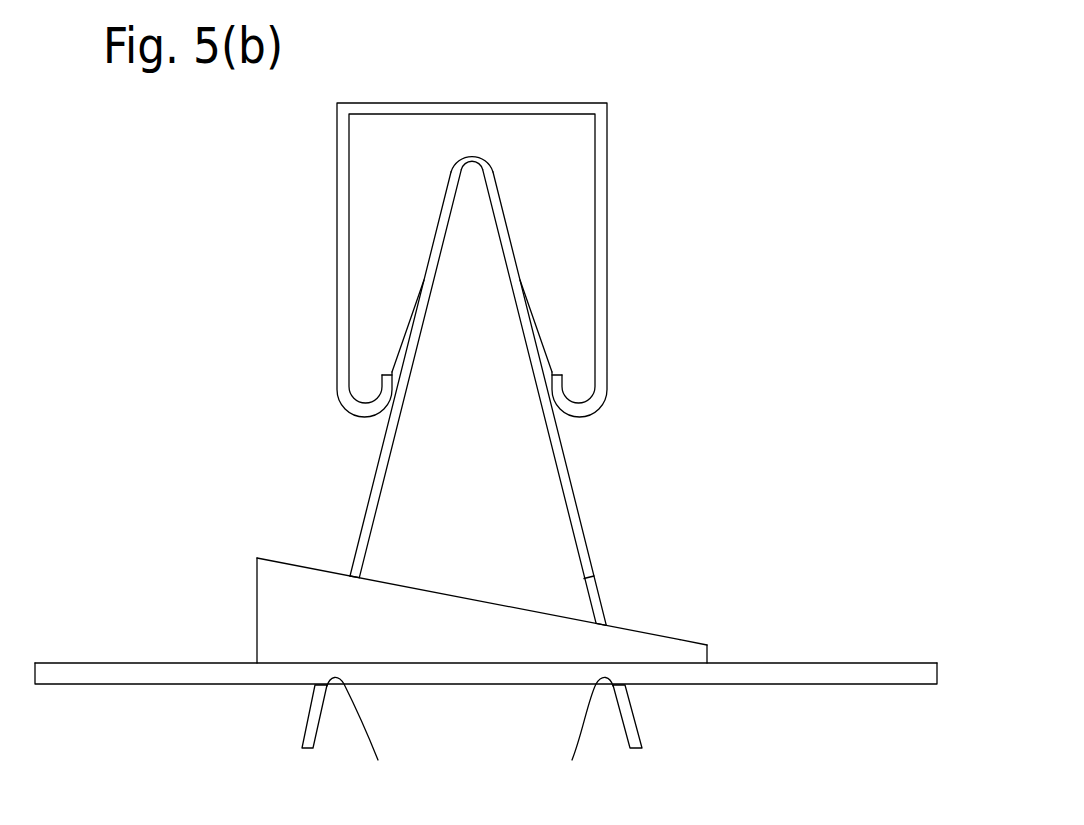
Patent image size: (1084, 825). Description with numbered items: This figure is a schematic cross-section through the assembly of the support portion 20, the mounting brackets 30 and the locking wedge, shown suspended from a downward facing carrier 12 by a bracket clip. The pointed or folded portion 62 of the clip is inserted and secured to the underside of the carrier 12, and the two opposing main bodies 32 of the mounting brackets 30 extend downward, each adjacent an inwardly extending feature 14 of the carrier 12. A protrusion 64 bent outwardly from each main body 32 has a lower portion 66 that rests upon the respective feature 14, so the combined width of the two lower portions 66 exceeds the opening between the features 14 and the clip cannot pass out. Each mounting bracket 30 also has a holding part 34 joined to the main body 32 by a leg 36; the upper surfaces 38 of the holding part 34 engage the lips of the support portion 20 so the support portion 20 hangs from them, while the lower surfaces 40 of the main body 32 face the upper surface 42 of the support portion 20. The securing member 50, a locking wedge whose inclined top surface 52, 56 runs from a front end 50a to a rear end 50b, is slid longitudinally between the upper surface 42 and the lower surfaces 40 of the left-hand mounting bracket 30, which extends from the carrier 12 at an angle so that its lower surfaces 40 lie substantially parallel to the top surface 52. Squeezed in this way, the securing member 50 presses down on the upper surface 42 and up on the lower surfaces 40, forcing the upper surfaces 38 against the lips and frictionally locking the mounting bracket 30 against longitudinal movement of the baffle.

The carrier 12 is at (523, 220).
The inwardly extending feature 14 is at (560, 378).
The support portion 20 is at (486, 681).
The mounting bracket 30 is at (494, 370).
The main body 32 is at (385, 440).
The holding part 34 is at (308, 727).
The leg 36 is at (530, 594).
The upper surface 38 is at (378, 760).
The lower surface 40 is at (595, 577).
The upper surface 42 is at (893, 663).
The securing member 50 is at (494, 569).
The front end 50a is at (708, 653).
The rear end 50b is at (257, 600).
The top surface 52 is at (300, 566).
The top surface 56 is at (688, 638).
The pointed or folded portion 62 is at (468, 145).
The protrusion 64 is at (540, 323).
The lower portion 66 is at (392, 370).